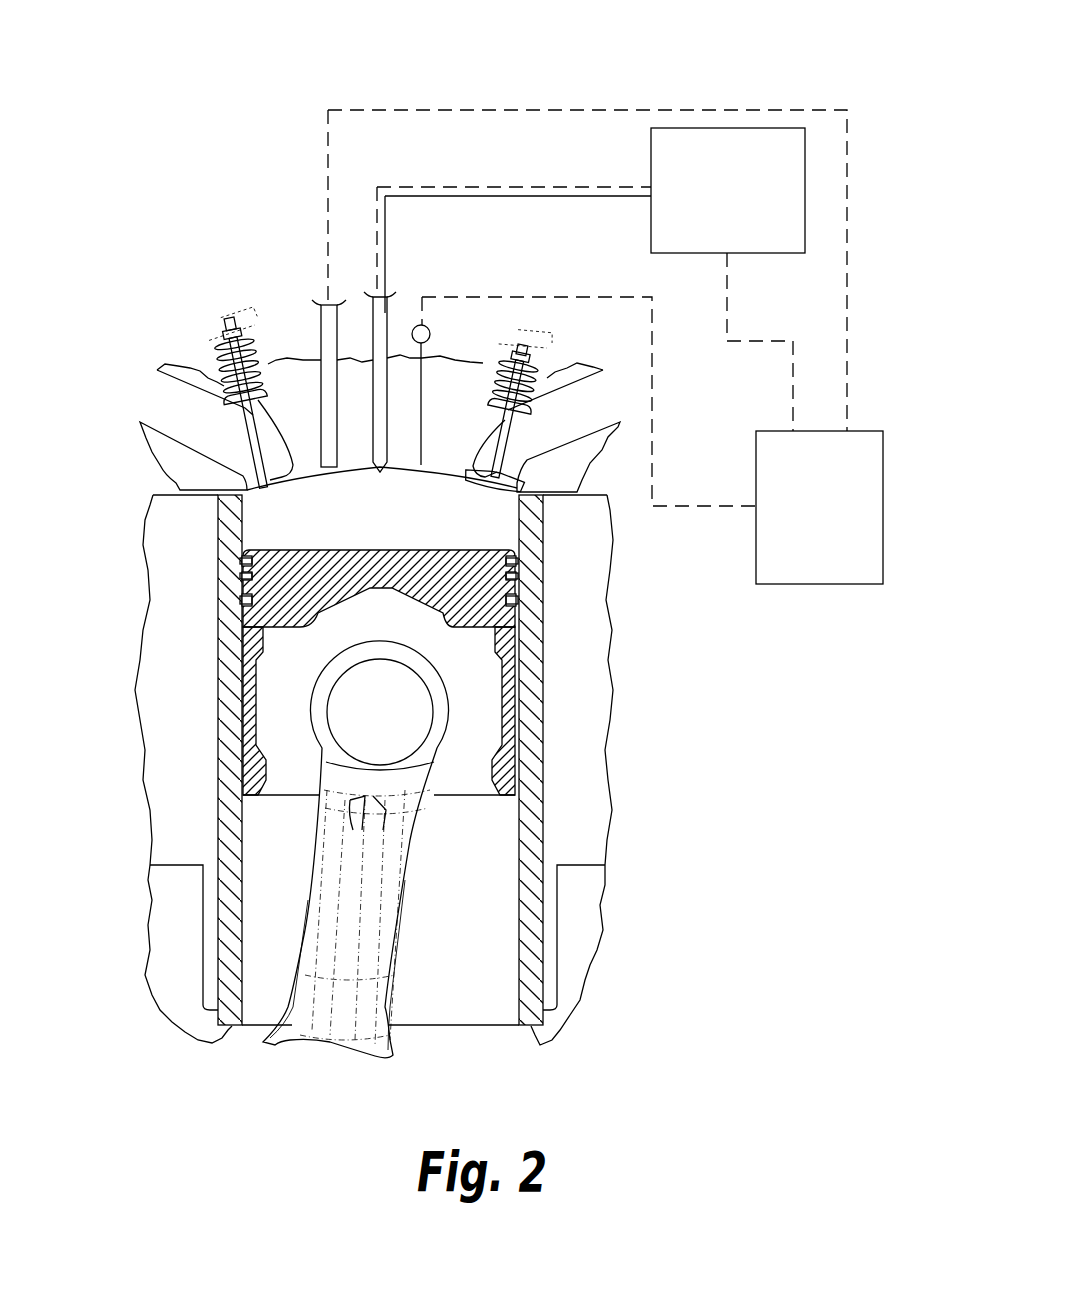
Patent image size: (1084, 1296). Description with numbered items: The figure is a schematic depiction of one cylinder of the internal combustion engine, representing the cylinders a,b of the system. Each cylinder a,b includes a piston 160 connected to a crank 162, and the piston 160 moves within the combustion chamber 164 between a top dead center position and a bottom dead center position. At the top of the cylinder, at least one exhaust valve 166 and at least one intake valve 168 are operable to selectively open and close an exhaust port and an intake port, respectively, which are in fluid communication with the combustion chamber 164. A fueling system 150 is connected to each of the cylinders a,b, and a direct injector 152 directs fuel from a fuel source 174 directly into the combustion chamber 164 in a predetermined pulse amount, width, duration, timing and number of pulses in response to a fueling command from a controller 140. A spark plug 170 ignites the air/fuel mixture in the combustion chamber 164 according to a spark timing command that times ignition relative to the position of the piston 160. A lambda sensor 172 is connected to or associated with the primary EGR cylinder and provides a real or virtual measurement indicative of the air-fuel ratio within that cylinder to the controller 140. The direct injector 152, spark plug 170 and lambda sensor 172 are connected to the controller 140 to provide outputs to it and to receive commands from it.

The fueling system 150 is at (823, 136).
The fuel source 174 is at (728, 190).
The controller 140 is at (819, 507).
The spark plug 170 is at (320, 332).
The direct injector 152 is at (387, 313).
The lambda sensor 172 is at (431, 337).
The exhaust valve 166 is at (257, 447).
The intake valve 168 is at (510, 444).
The combustion chamber 164 is at (300, 518).
The piston 160 is at (472, 605).
The crank 162 is at (398, 958).
The cylinders a,b is at (217, 752).